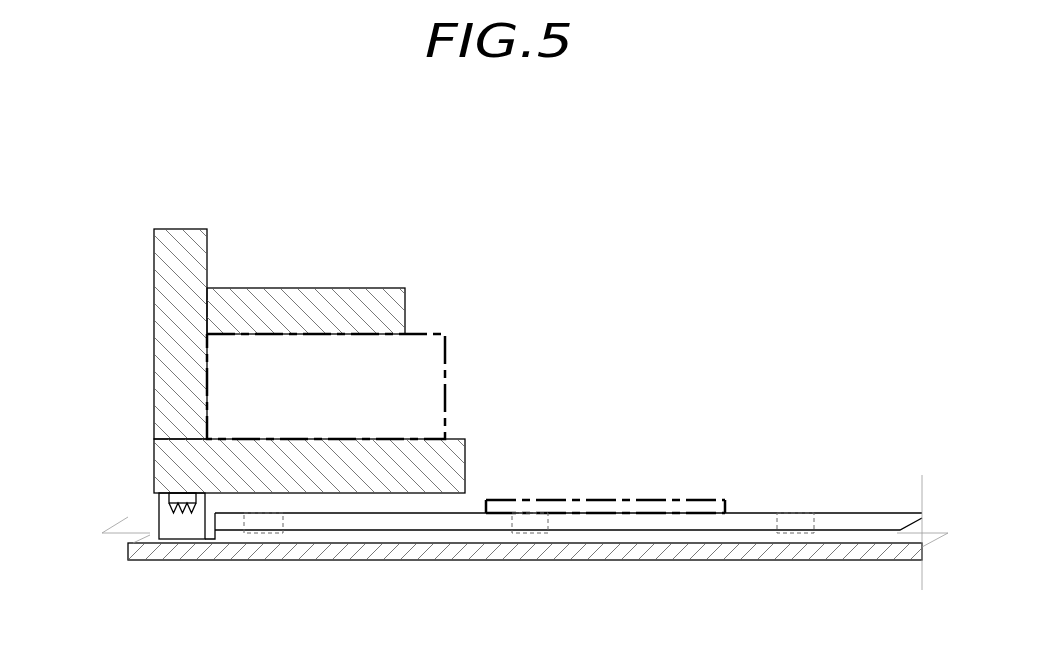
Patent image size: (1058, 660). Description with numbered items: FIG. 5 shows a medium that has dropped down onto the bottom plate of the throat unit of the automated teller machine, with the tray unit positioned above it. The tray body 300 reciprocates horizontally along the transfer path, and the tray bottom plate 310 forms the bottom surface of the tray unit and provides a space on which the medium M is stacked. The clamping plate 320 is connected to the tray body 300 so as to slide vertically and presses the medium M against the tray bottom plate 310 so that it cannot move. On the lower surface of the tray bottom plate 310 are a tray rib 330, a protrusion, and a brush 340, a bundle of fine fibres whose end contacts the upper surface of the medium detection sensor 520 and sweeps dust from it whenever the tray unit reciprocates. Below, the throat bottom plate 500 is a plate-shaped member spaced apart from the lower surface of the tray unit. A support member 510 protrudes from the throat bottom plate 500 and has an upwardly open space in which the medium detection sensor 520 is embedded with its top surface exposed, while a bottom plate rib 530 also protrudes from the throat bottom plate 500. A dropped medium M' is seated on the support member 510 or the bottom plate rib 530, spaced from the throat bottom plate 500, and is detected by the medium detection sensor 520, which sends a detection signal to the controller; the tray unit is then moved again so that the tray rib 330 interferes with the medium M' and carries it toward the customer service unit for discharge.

The tray body 300 is at (181, 237).
The clamping plate 320 is at (403, 313).
The tray bottom plate 310 is at (455, 470).
The tray rib 330 is at (158, 496).
The brush 340 is at (180, 500).
The throat bottom plate 500 is at (347, 553).
The support member 510 is at (413, 522).
The medium detection sensor 520 is at (260, 537).
The bottom plate rib 530 is at (223, 537).
The medium M is at (358, 386).
The dropped medium M' is at (605, 483).